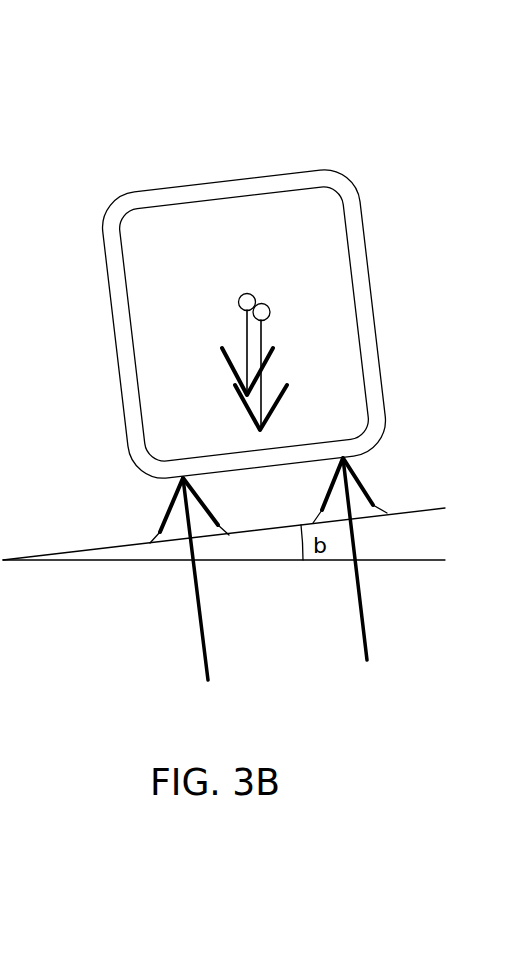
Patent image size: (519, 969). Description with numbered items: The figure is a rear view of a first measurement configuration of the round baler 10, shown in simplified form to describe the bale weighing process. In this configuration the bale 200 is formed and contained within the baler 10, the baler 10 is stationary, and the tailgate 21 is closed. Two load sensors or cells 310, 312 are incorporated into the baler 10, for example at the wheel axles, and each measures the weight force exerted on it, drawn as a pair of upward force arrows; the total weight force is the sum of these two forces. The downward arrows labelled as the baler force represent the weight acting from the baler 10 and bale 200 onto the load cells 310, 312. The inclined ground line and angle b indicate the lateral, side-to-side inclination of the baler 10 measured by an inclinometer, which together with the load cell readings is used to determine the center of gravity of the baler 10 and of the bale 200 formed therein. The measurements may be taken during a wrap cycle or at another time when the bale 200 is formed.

The round baler 10 is at (231, 102).
The tailgate 21 is at (317, 173).
The bale 200 is at (328, 262).
The load cell 310 is at (181, 479).
The load cell 312 is at (345, 458).